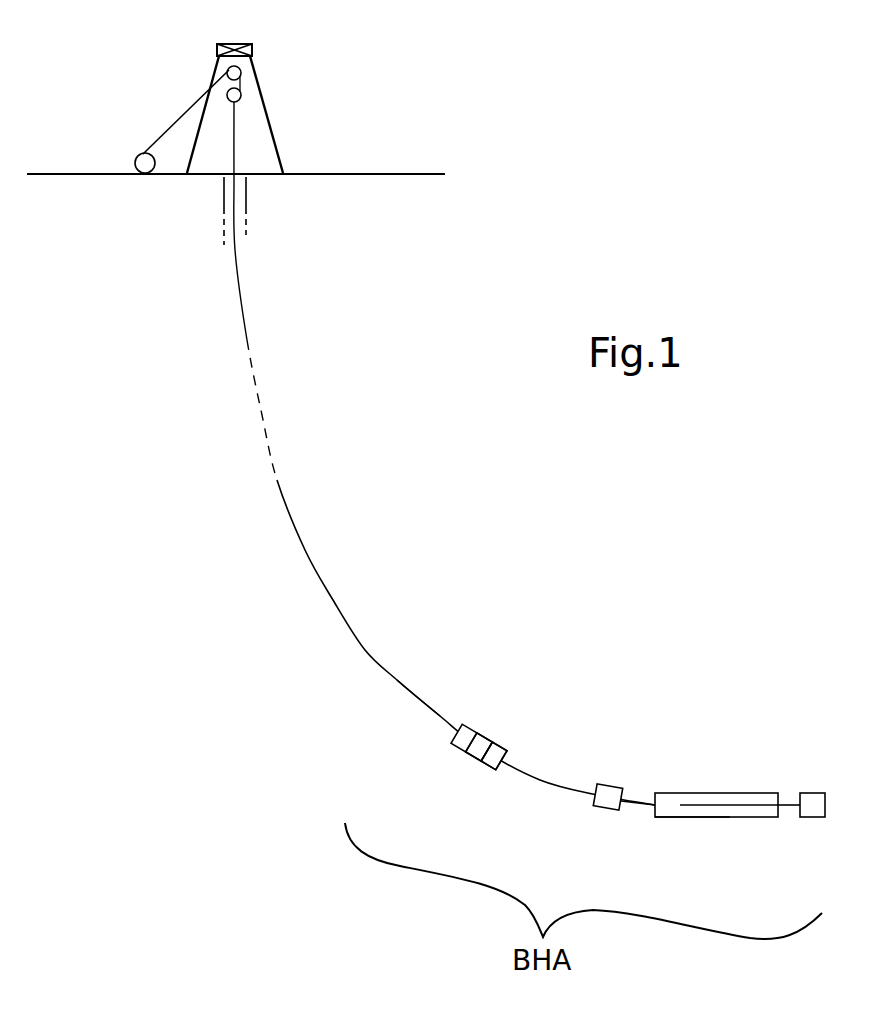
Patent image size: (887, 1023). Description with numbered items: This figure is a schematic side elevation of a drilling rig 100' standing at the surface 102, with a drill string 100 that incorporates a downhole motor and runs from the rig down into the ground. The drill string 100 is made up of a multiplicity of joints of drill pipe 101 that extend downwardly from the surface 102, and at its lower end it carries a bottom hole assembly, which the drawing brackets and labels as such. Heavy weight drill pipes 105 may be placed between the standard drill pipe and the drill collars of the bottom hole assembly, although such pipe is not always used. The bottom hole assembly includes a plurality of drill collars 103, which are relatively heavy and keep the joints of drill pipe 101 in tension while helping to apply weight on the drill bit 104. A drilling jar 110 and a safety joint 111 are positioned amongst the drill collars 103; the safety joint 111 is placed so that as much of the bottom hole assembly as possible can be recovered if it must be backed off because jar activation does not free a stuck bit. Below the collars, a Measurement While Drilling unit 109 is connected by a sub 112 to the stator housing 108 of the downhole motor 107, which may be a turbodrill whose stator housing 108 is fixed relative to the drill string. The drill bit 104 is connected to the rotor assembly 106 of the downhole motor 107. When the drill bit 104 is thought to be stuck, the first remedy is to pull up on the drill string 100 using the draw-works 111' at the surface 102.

The drill string 100 is at (444, 453).
The drilling rig 100' is at (273, 90).
The joints of drill pipe 101 is at (240, 275).
The surface 102 is at (353, 173).
The drill collars 103 is at (475, 723).
The drill bit 104 is at (813, 810).
The heavy weight drill pipes 105 is at (440, 720).
The rotor assembly 106 is at (727, 802).
The downhole motor 107 is at (705, 818).
The stator housing 108 is at (670, 818).
The Measurement While Drilling (MWD) unit 109 is at (610, 787).
The drilling jar 110 is at (485, 770).
The safety joint 111 is at (519, 713).
The draw-works 111' is at (93, 144).
The sub 112 is at (633, 807).